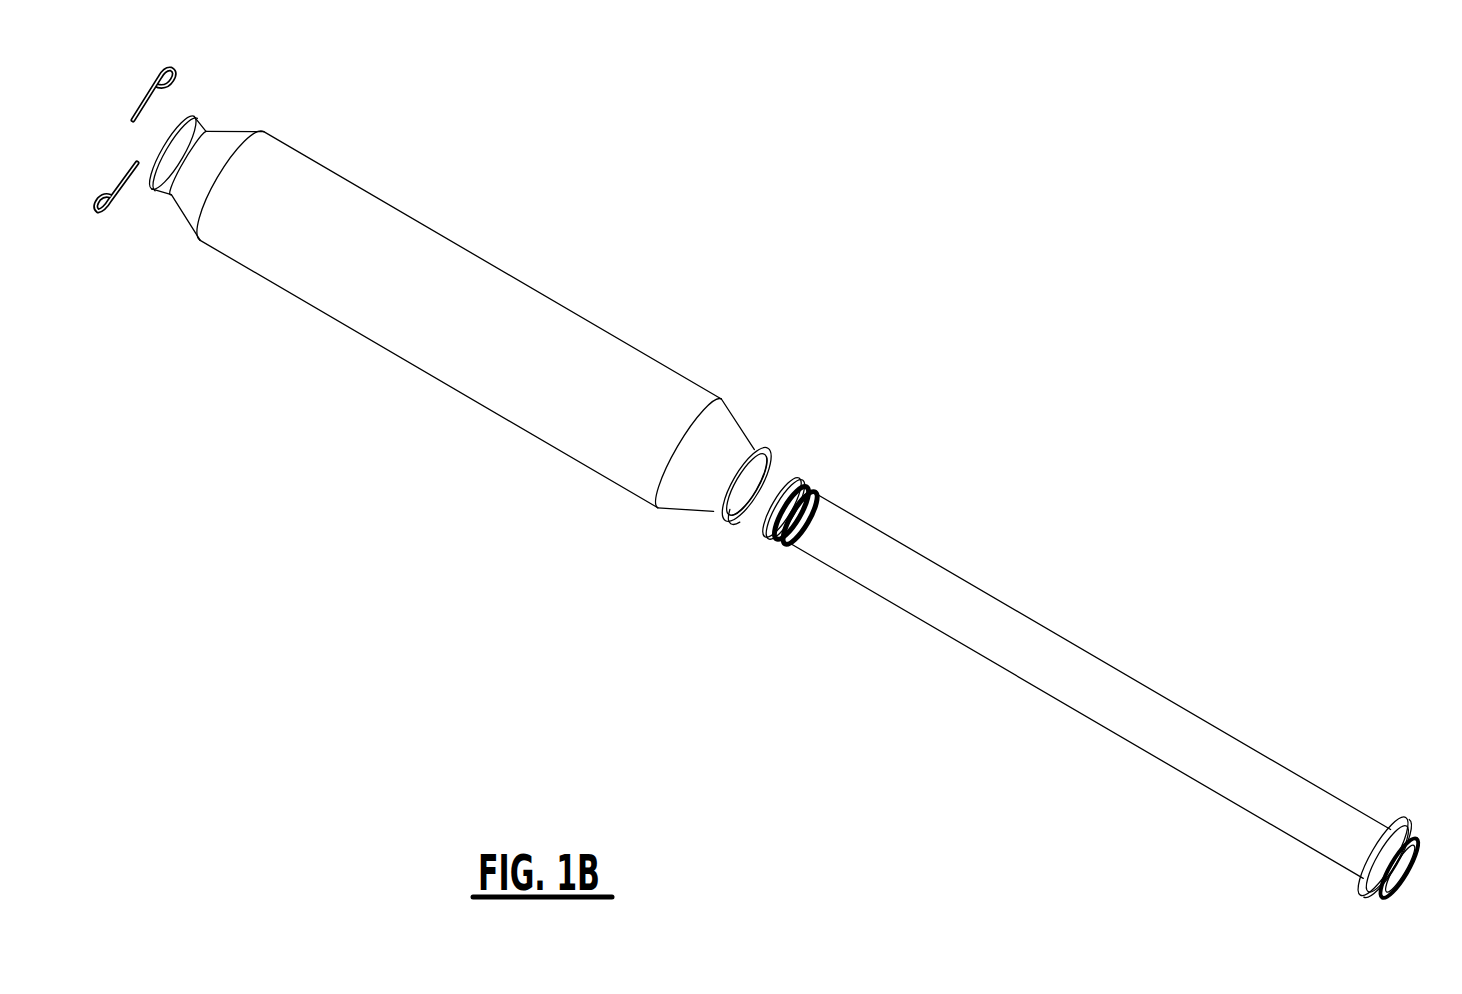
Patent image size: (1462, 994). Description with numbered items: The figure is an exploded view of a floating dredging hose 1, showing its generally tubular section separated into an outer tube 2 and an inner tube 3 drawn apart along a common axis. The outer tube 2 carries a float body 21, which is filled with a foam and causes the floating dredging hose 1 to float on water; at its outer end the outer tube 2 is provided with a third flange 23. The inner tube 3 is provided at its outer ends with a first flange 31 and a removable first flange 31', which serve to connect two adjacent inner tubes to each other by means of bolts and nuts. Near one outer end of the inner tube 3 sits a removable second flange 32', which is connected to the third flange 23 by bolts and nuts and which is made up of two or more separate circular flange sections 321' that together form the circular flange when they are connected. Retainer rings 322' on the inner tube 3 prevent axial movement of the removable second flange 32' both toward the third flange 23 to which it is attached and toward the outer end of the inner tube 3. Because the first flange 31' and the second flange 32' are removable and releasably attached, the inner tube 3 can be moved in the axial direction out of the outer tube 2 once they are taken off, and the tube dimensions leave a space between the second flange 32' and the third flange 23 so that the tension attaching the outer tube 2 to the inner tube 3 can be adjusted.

The floating dredging hose 1 is at (830, 213).
The outer tube 2 is at (473, 406).
The float body 21 is at (438, 252).
The third flange 23 is at (197, 121).
The inner tube 3 is at (1230, 754).
The first flange 31 is at (1398, 825).
The removable first flange 31' is at (814, 471).
The removable second flange 32' is at (229, 164).
The circular flange section 321' is at (128, 165).
The retainer ring 322' is at (839, 556).